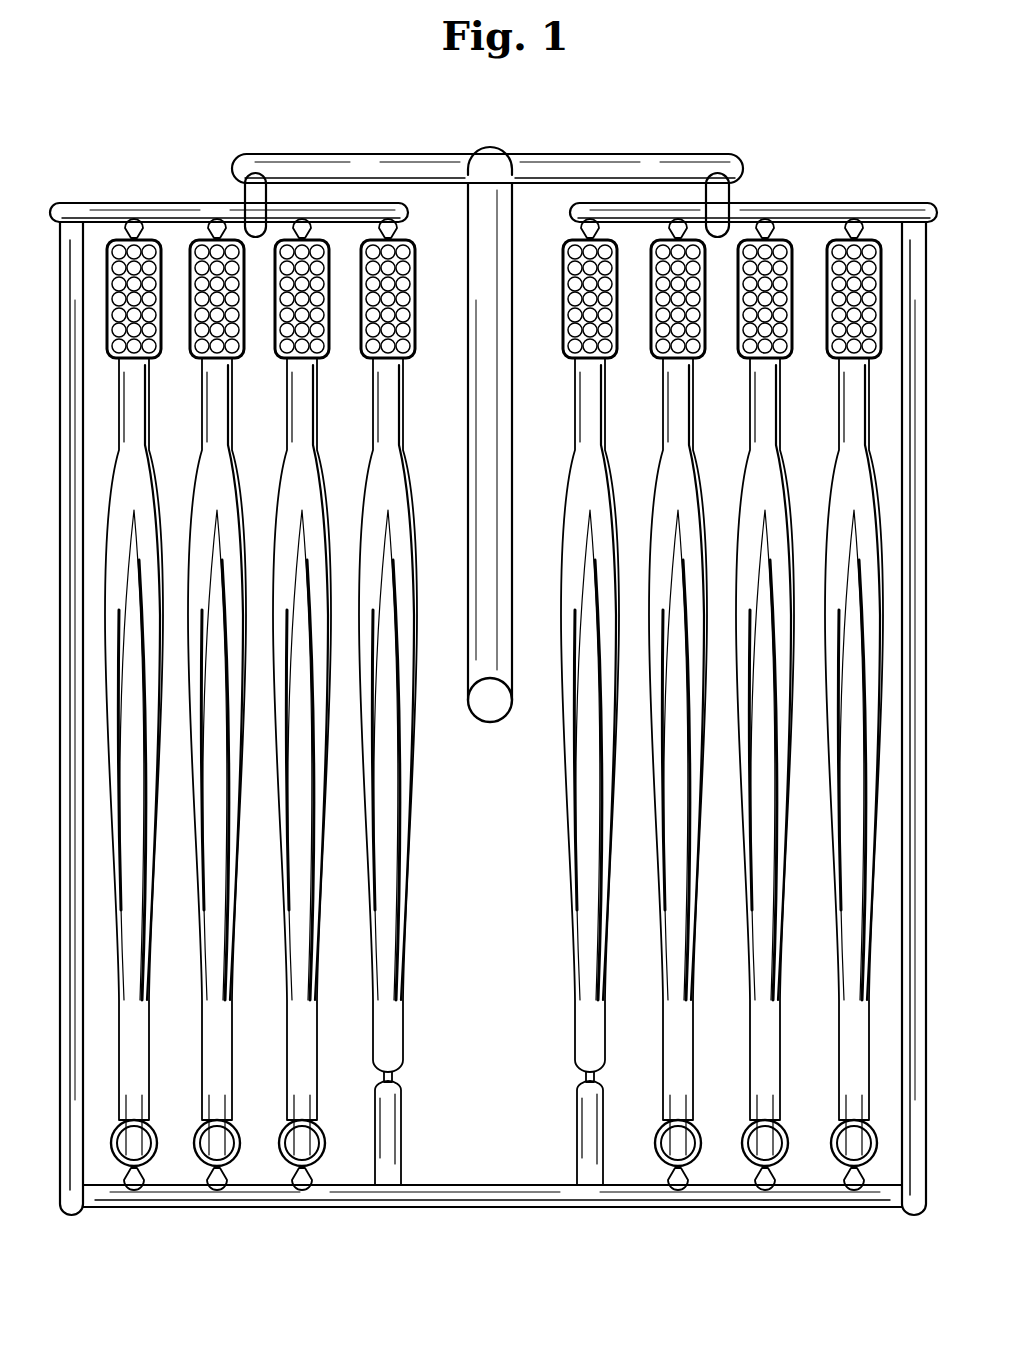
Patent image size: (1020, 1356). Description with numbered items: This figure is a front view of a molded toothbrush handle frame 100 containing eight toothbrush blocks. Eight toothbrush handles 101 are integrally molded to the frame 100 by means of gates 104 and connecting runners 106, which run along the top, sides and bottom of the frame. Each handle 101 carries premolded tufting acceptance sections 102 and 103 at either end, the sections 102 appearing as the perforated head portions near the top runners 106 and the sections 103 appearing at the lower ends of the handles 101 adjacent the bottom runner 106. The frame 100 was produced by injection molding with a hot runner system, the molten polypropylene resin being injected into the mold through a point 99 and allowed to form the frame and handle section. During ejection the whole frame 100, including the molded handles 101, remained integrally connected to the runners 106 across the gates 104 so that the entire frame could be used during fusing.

The point 99 is at (485, 714).
The molded toothbrush handle frame 100 is at (478, 149).
The toothbrush handle 101 is at (690, 897).
The premolded tufting acceptance section 102 is at (743, 352).
The premolded tufting acceptance section 103 is at (782, 1147).
The gate 104 is at (209, 232).
The connecting runner 106 is at (108, 204).